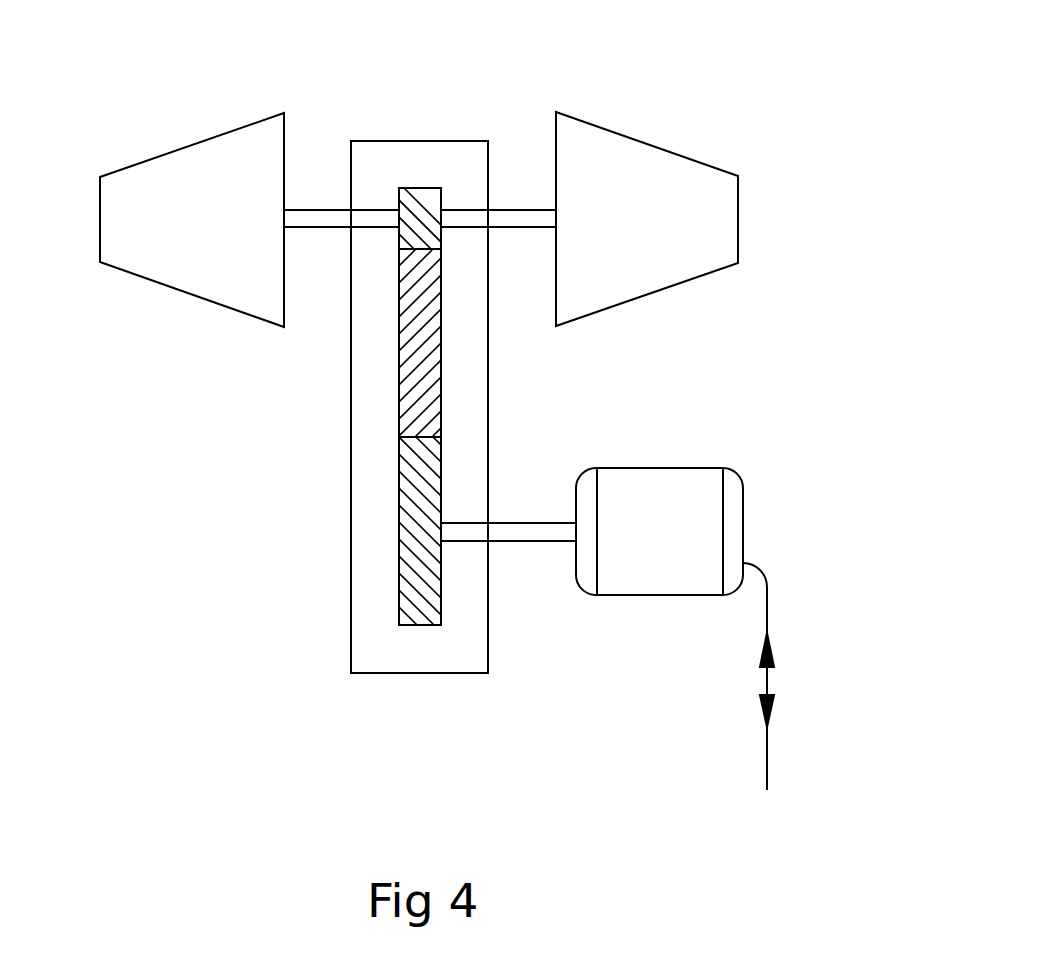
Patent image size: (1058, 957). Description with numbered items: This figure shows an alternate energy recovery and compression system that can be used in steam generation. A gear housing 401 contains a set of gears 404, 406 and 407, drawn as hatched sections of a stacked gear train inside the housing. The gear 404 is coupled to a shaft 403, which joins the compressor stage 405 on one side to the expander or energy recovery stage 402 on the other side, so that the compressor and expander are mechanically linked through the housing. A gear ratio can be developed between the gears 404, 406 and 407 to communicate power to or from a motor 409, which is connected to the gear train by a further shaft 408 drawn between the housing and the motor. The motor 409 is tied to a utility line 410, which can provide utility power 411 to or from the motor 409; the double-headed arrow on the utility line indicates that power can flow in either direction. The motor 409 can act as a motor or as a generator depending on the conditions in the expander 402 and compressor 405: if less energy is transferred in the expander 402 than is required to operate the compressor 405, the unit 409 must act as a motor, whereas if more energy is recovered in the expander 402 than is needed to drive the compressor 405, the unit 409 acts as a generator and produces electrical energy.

The gear housing 401 is at (457, 141).
The expander or energy recovery stage 402 is at (640, 142).
The shaft 403 is at (333, 230).
The gear 404 is at (399, 188).
The compressor stage 405 is at (202, 142).
The gear 406 is at (441, 394).
The gear 407 is at (399, 498).
The motor shaft 408 is at (520, 541).
The motor 409 is at (743, 522).
The utility line 410 is at (767, 597).
The utility power 411 is at (764, 837).